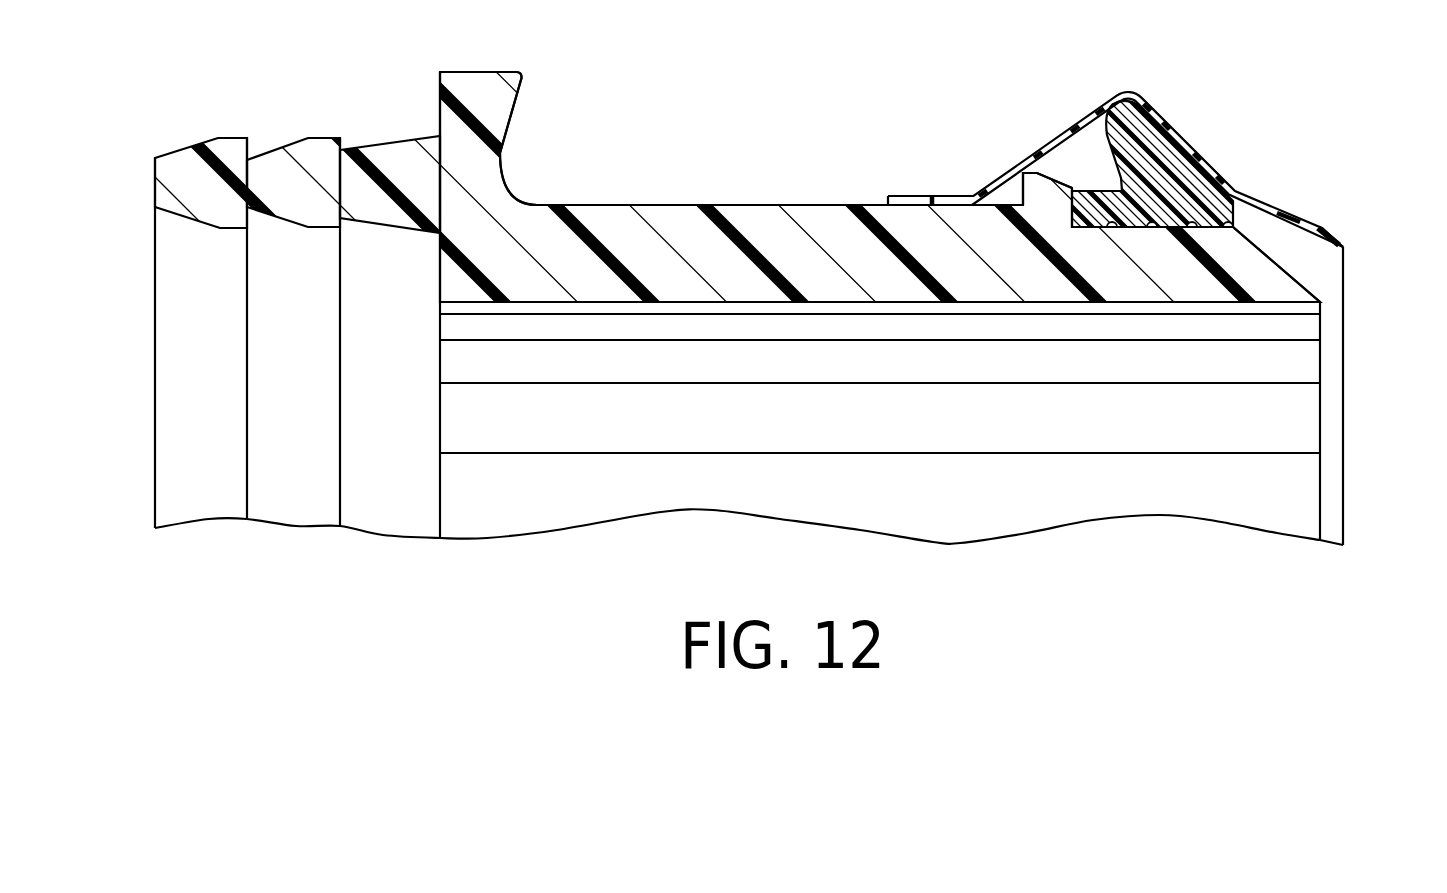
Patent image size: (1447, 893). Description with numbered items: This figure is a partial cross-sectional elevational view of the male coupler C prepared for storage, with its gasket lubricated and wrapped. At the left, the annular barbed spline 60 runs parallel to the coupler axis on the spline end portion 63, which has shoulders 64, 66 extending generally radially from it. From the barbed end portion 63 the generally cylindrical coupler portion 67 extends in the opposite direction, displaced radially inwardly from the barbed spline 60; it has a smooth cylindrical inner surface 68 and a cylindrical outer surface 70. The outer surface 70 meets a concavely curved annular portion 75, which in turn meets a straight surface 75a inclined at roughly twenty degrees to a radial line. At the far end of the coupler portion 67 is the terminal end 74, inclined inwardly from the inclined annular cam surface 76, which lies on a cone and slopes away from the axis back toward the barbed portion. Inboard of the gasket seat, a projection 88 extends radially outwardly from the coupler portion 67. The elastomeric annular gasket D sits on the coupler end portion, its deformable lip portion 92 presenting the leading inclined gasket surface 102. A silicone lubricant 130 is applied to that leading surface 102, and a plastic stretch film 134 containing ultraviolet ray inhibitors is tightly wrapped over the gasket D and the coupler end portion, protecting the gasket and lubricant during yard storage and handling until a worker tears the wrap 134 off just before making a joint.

The annular barbed spline 60 is at (182, 158).
The spline end portion 63 is at (427, 137).
The shoulder 66 is at (440, 130).
The shoulder 64 is at (440, 281).
The coupler portion 67 is at (900, 285).
The cylindrical inner surface 68 is at (603, 303).
The cylindrical outer surface 70 is at (677, 203).
The concavely curved annular portion 75 is at (505, 178).
The straight surface 75a is at (513, 103).
The projection 88 is at (1037, 185).
The plastic stretch film 134 is at (1000, 176).
The deformable lip portion 92 is at (1122, 115).
The leading inclined gasket surface 102 is at (1153, 97).
The silicone lubricant 130 is at (1197, 152).
The inclined annular cam surface 76 is at (1342, 250).
The terminal end 74 is at (1334, 276).
The annular gasket D is at (1150, 223).
The male coupler C is at (477, 540).